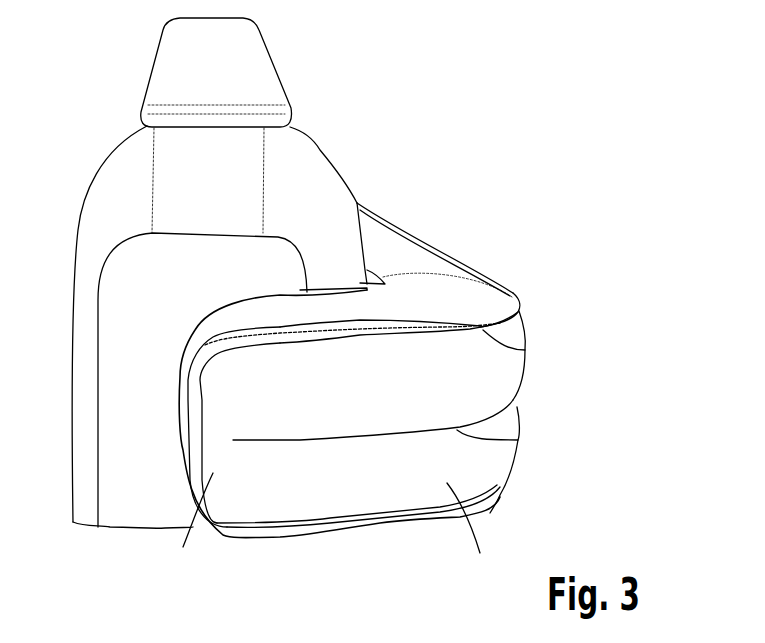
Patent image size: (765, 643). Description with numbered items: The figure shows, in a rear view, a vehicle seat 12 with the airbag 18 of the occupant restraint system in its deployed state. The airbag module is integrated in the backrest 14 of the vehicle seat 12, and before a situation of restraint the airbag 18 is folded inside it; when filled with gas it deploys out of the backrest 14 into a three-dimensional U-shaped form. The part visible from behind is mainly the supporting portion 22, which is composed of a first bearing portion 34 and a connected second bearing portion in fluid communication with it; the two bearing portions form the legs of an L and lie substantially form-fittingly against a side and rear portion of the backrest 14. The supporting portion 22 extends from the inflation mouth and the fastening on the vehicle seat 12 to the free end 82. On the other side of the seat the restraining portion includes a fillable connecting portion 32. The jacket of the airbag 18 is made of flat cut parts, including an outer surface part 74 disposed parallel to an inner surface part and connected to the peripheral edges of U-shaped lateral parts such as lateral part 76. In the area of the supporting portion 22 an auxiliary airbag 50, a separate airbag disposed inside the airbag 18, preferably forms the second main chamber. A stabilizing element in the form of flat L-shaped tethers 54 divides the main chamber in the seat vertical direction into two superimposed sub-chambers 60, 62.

The vehicle seat 12 is at (315, 143).
The backrest 14 is at (133, 162).
The airbag 18 is at (523, 274).
The supporting portion 22 is at (478, 248).
The connecting portion 32 is at (377, 530).
The first bearing portion 34 is at (449, 248).
The auxiliary airbag 50 is at (525, 350).
The tethers 54 is at (518, 440).
The sub-chamber 60 is at (368, 467).
The sub-chamber 62 is at (356, 419).
The outer surface part 74 is at (468, 533).
The lateral part 76 is at (413, 263).
The free end 82 is at (191, 528).